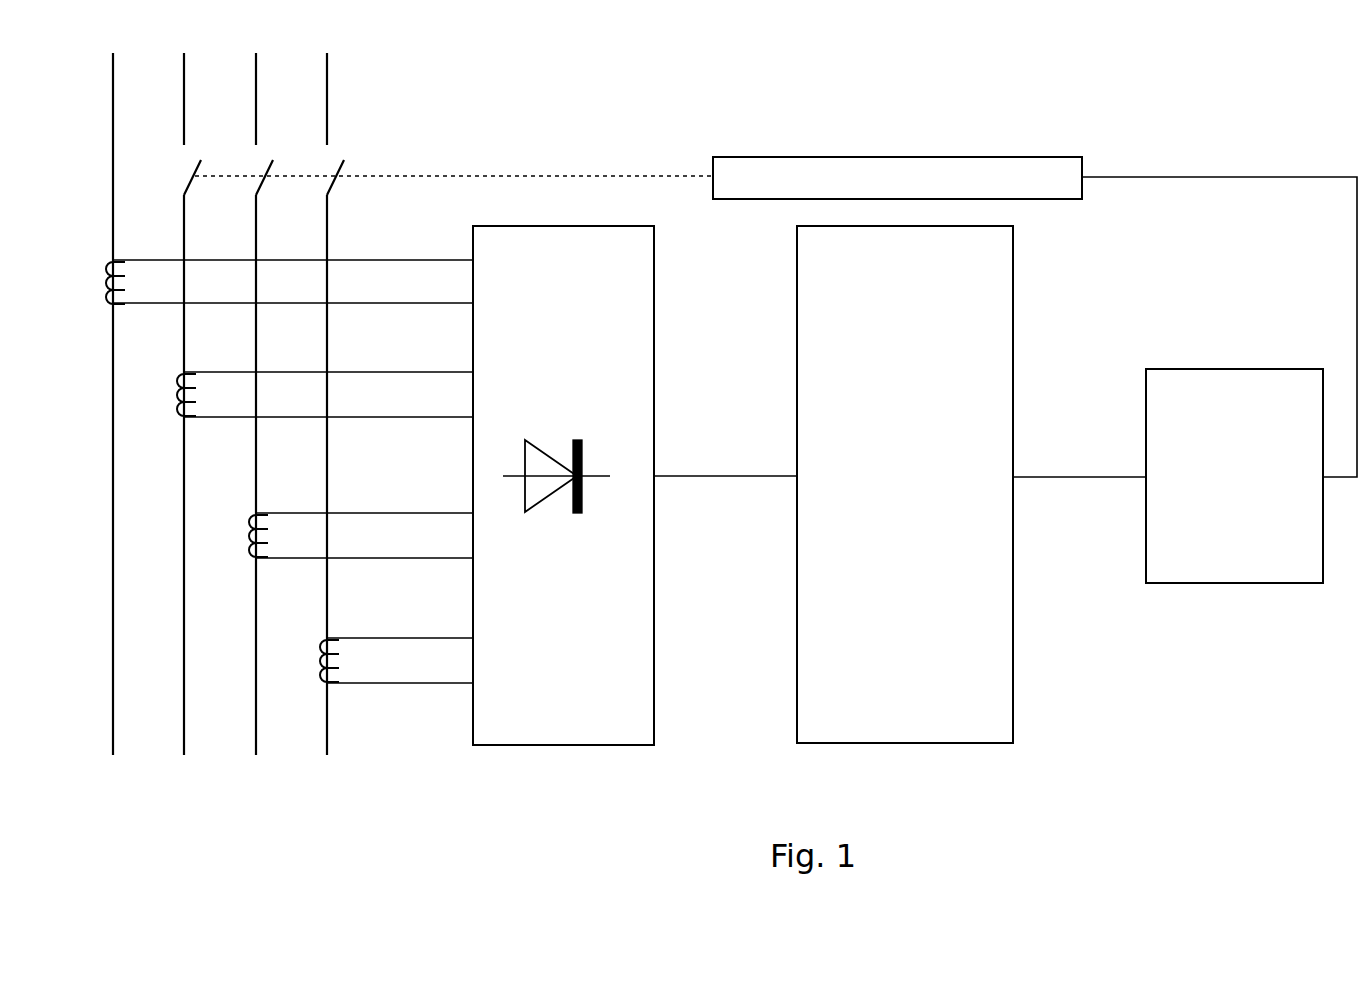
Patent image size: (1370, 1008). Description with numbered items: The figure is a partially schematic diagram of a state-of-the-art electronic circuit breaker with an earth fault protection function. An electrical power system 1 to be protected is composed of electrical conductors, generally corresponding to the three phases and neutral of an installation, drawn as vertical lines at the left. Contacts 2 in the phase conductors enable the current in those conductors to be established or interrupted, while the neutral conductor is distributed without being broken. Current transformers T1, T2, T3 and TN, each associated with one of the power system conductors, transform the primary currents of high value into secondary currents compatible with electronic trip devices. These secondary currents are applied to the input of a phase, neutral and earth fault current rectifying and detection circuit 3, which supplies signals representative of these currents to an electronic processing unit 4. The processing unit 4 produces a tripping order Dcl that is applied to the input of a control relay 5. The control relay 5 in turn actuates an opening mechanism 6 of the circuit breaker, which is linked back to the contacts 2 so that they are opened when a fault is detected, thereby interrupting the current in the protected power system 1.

The electrical power system 1 is at (333, 95).
The contacts 2 is at (340, 168).
The rectifying and detection circuit 3 is at (578, 745).
The electronic processing unit 4 is at (905, 743).
The control relay 5 is at (1220, 583).
The opening mechanism 6 is at (875, 157).
The current transformer TN is at (106, 298).
The current transformer T1 is at (176, 412).
The current transformer T2 is at (248, 553).
The current transformer T3 is at (320, 680).
The tripping order Dcl is at (1120, 480).